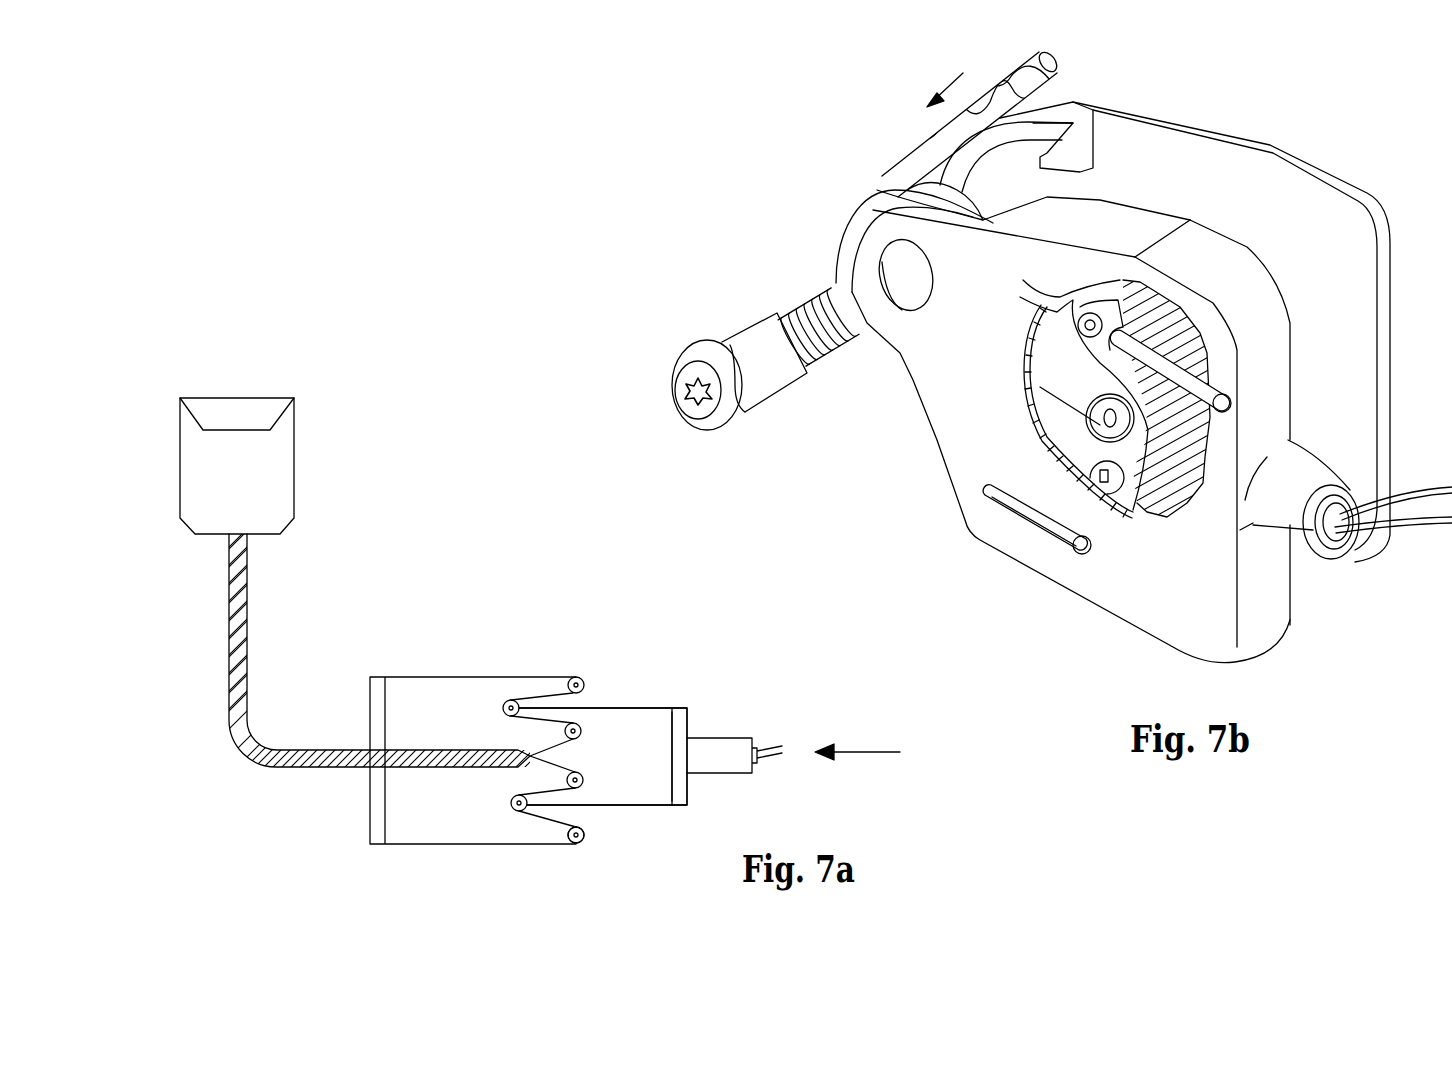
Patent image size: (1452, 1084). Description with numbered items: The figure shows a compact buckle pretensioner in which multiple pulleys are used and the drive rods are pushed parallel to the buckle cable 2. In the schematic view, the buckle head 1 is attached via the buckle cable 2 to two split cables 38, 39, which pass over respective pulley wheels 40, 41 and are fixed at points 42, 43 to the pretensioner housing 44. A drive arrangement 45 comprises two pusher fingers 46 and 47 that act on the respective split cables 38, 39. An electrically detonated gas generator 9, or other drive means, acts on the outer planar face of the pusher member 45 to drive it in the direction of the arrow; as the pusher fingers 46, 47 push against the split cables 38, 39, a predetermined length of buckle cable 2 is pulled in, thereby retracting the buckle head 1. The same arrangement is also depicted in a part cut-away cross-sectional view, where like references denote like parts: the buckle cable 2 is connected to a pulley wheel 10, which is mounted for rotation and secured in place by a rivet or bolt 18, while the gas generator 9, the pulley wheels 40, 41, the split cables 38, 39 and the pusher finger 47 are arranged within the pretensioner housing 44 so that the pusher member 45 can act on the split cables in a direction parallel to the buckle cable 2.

In FIG. 7A, the buckle head 1 is at (287, 483).
In FIG. 7A, the buckle cable 2 is at (242, 657).
In FIG. 7B, the buckle cable 2 is at (1001, 80).
In FIG. 7A, the electrically detonated gas generator 9 is at (750, 738).
In FIG. 7B, the electrically detonated gas generator 9 is at (1300, 540).
In FIG. 7B, the pulley wheel 10 is at (850, 208).
In FIG. 7B, the rivet or bolt 18 is at (753, 382).
In FIG. 7A, the split cable 38 is at (582, 828).
In FIG. 7B, the split cable 38 is at (1053, 423).
In FIG. 7A, the split cable 39 is at (579, 696).
In FIG. 7B, the split cable 39 is at (1050, 400).
In FIG. 7A, the pulley wheel 40 is at (584, 779).
In FIG. 7B, the pulley wheel 40 is at (1093, 470).
In FIG. 7A, the pulley wheel 41 is at (582, 731).
In FIG. 7B, the pulley wheel 41 is at (1103, 430).
In FIG. 7A, the fixing point 42 is at (581, 842).
In FIG. 7A, the fixing point 43 is at (584, 680).
In FIG. 7A, the pretensioner housing 44 is at (440, 845).
In FIG. 7A, the drive arrangement 45 is at (697, 691).
In FIG. 7B, the drive arrangement 45 is at (1078, 582).
In FIG. 7A, the pusher finger 46 is at (648, 800).
In FIG. 7A, the pusher finger 47 is at (652, 708).
In FIG. 7B, the pusher finger 47 is at (1173, 367).